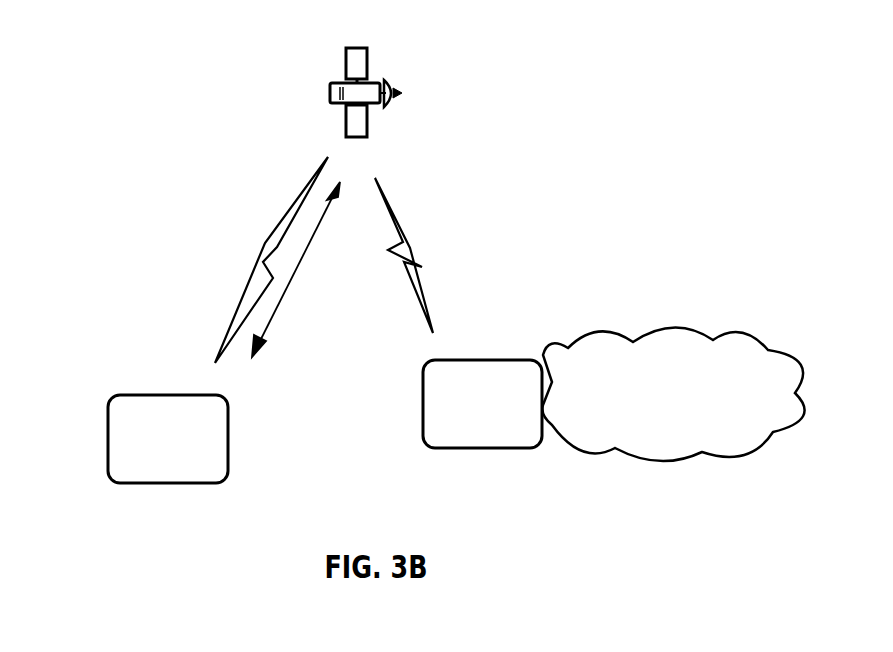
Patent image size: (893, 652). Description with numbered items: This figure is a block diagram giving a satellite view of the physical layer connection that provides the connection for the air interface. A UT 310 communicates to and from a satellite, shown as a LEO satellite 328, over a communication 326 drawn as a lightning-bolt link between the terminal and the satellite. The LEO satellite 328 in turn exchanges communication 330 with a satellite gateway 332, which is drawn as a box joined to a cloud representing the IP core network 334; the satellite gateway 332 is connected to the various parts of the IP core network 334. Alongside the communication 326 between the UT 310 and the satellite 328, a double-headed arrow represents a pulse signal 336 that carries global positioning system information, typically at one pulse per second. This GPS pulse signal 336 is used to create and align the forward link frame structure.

The LEO satellite 328 is at (345, 63).
The communication 326 is at (254, 264).
The communication 330 is at (403, 228).
The pulse signal 336 is at (294, 280).
The UT 310 is at (108, 440).
The satellite gateway 332 is at (423, 392).
The IP core network 334 is at (655, 436).